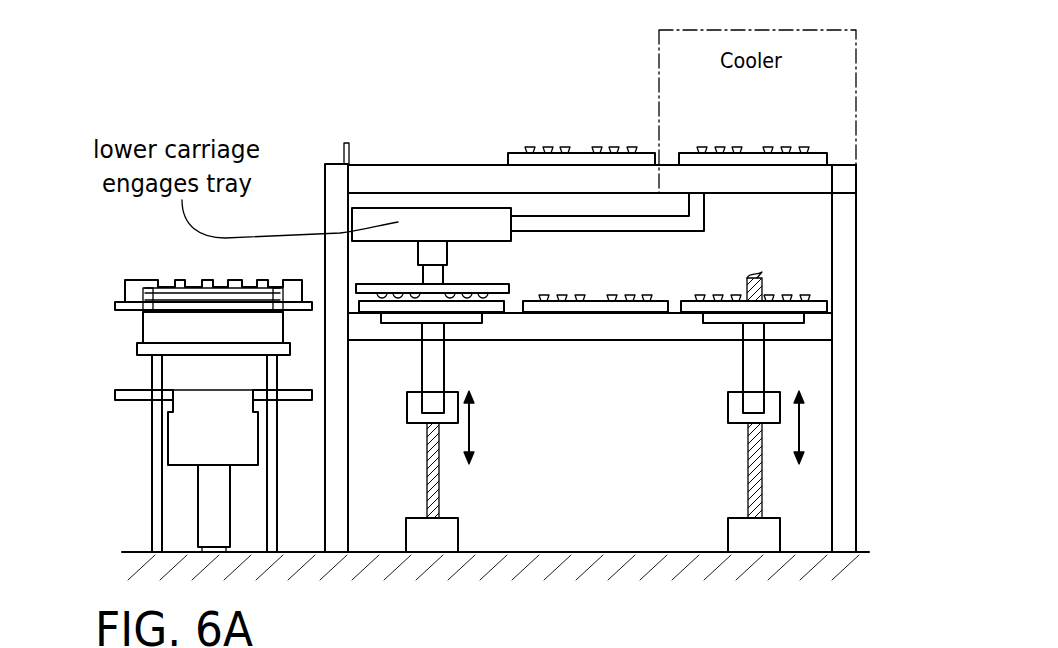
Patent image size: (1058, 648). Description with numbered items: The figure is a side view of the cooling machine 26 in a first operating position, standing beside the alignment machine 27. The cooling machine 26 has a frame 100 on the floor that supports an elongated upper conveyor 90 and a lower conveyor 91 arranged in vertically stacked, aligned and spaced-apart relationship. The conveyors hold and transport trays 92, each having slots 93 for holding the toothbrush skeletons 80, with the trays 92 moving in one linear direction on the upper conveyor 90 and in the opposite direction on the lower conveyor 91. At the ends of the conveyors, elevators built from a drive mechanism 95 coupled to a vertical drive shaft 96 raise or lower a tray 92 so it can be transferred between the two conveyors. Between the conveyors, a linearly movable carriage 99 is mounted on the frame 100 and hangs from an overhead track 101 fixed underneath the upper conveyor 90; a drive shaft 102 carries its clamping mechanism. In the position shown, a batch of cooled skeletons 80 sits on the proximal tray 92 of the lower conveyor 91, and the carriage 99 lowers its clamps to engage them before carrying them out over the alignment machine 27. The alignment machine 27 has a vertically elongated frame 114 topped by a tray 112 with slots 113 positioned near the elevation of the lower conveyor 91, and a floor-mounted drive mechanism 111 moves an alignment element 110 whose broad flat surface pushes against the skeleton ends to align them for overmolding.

The cooling machine 26 is at (417, 88).
The alignment machine 27 is at (166, 384).
The toothbrush skeletons 80 is at (543, 148).
The upper conveyor 90 is at (812, 178).
The lower conveyor 91 is at (812, 325).
The trays 92 is at (580, 152).
The slots 93 is at (527, 148).
The drive mechanism 95 is at (505, 277).
The vertical drive shaft 96 is at (417, 298).
The carriage 99 is at (435, 228).
The frame 100 is at (857, 435).
The overhead track 101 is at (661, 228).
The drive shaft 102 is at (417, 255).
The alignment element 110 is at (113, 393).
The drive mechanism 111 is at (213, 502).
The tray 112 is at (120, 297).
The slots 113 is at (163, 280).
The frame 114 is at (150, 453).